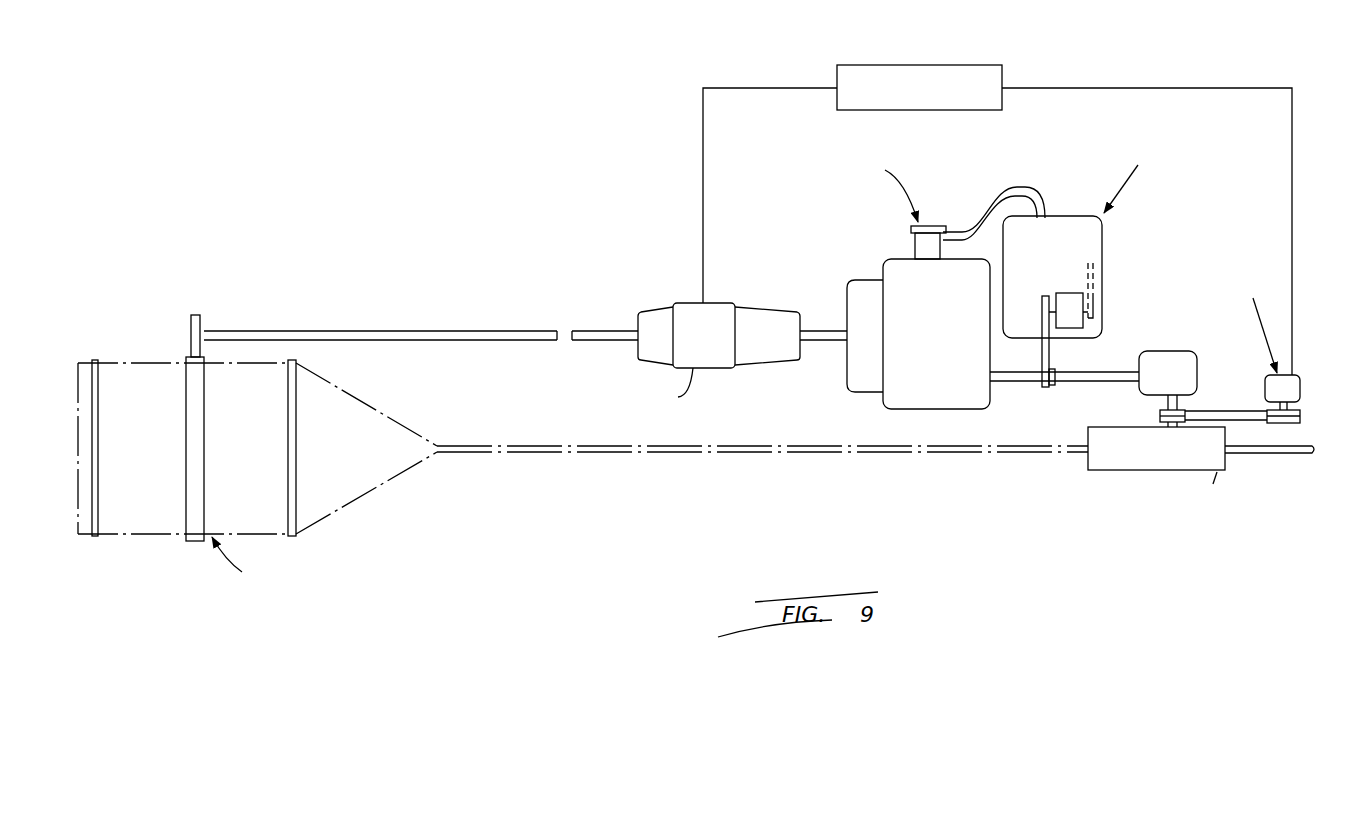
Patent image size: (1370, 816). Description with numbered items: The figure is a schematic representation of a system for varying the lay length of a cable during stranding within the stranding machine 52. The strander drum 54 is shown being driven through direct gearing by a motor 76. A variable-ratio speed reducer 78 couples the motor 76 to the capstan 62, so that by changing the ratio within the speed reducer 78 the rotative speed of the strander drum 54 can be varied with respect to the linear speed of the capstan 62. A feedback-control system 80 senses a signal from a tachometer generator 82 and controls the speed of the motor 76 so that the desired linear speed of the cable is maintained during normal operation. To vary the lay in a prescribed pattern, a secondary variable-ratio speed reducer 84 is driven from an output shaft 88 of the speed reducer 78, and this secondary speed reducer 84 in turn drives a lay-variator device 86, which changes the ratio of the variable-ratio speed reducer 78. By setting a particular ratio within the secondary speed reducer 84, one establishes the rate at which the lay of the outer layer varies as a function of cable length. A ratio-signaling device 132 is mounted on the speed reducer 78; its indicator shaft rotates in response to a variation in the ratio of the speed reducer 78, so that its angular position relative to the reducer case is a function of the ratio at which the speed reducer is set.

The stranding machine 52 is at (177, 355).
The strander drum 54 is at (154, 537).
The capstan 62 is at (1088, 463).
The motor 76 is at (658, 308).
The variable-ratio speed reducer 78 is at (848, 390).
The feedback-control system 80 is at (880, 63).
The tachometer generator 82 is at (1298, 380).
The secondary variable-ratio speed reducer 84 is at (1070, 328).
The lay-variator device 86 is at (1110, 236).
The output shaft 88 is at (1003, 382).
The ratio-signaling device 132 is at (913, 237).